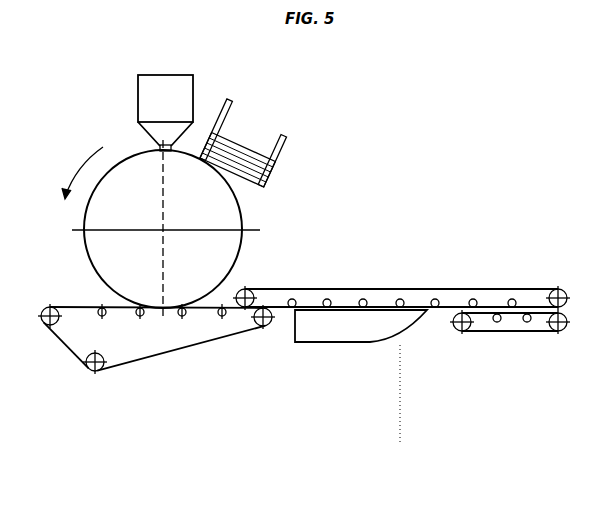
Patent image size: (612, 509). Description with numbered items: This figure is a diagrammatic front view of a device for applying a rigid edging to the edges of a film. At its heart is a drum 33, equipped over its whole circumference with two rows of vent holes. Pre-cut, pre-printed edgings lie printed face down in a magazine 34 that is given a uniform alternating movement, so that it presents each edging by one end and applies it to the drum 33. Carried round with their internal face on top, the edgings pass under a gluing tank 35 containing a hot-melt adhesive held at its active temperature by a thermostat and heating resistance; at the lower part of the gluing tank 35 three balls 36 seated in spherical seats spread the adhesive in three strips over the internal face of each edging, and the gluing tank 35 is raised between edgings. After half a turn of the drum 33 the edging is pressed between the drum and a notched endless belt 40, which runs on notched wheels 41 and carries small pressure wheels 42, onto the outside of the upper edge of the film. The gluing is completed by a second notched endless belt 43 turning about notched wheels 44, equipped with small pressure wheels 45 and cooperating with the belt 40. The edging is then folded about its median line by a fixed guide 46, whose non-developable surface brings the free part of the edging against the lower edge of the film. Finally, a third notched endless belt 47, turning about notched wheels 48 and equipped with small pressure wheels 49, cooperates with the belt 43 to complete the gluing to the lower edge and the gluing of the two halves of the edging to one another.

The drum 33 is at (100, 254).
The magazine 34 is at (292, 153).
The gluing tank 35 is at (142, 92).
The balls 36 is at (160, 148).
The notched endless belt 40 is at (143, 357).
The notched wheels 41 is at (44, 322).
The small pressure wheels 42 is at (98, 316).
The notched endless belt 43 is at (275, 285).
The notched wheels 44 is at (243, 291).
The small pressure wheels 45 is at (296, 299).
The fixed guide 46 is at (396, 336).
The notched endless belt 47 is at (493, 334).
The notched wheels 48 is at (459, 332).
The small pressure wheels 49 is at (500, 322).